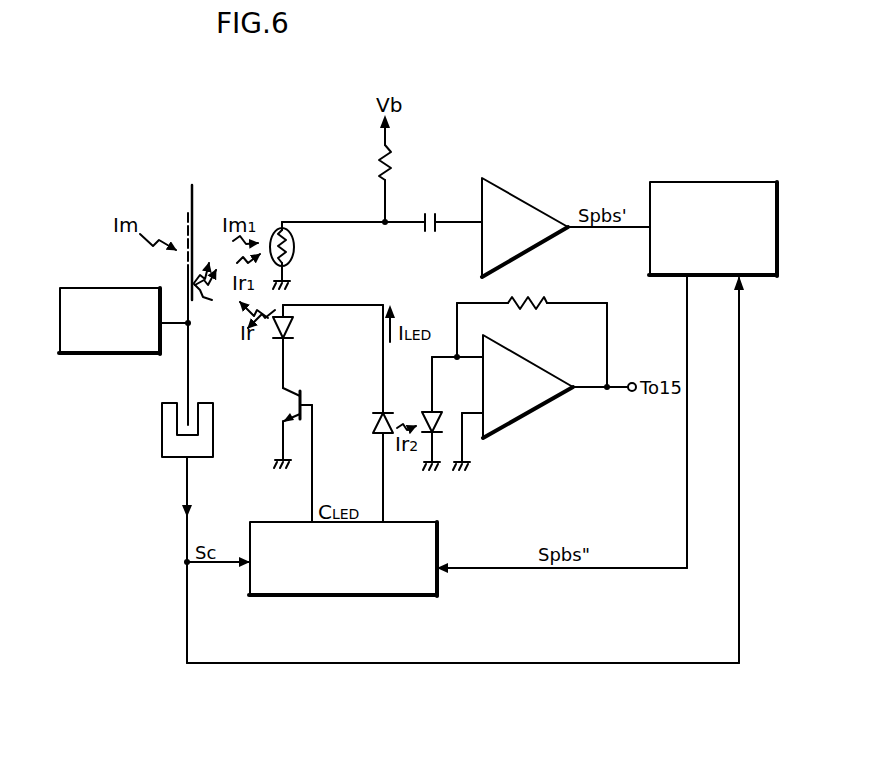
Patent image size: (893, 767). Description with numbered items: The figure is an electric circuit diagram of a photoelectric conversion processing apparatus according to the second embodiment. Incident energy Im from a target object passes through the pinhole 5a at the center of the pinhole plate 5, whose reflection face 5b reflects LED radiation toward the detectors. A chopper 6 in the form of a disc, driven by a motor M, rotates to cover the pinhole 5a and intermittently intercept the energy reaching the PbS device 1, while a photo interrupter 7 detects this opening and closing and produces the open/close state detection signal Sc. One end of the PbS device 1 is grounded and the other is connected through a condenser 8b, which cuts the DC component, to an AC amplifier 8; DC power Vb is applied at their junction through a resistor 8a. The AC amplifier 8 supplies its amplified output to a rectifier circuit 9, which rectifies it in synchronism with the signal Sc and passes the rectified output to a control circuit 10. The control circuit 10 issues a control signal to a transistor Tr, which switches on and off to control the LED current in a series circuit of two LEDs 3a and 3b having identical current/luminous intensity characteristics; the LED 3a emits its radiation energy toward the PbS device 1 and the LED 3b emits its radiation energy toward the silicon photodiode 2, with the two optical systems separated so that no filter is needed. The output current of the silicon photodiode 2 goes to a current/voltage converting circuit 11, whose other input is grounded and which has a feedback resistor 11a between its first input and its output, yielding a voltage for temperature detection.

The PbS device 1 is at (293, 248).
The silicon photodiode 2 is at (439, 427).
The LED 3a is at (290, 328).
The LED 3b is at (373, 418).
The pinhole plate 5 is at (193, 187).
The pinhole 5a is at (192, 247).
The reflection face 5b is at (193, 288).
The chopper 6 is at (189, 358).
The photo interrupter 7 is at (204, 408).
The AC amplifier 8 is at (515, 192).
The resistor 8a is at (388, 165).
The condenser 8b is at (424, 234).
The rectifier circuit 9 is at (698, 182).
The control circuit 10 is at (438, 544).
The current/voltage converting circuit 11 is at (543, 403).
The feedback resistor 11a is at (530, 302).
The motor M is at (90, 354).
The transistor Tr is at (287, 392).